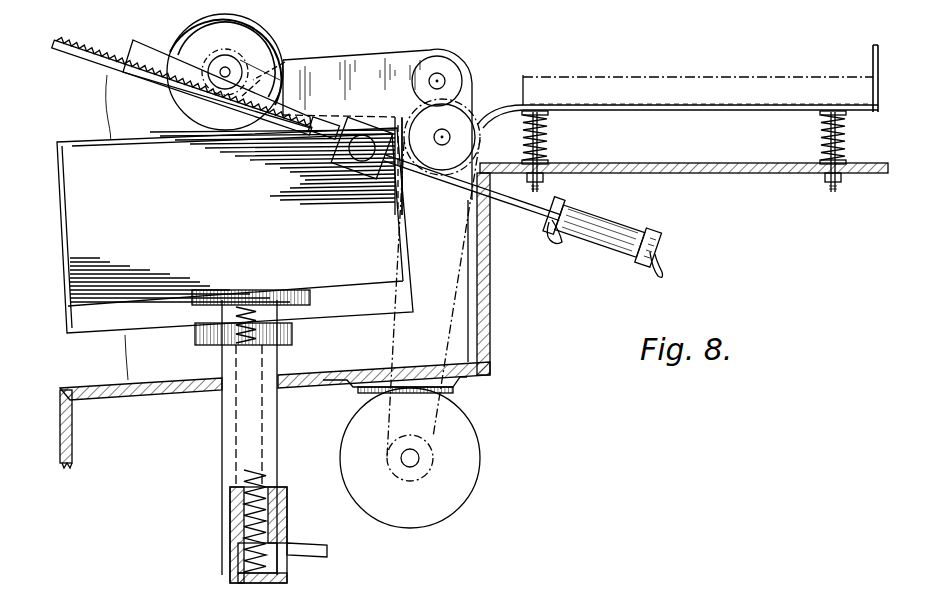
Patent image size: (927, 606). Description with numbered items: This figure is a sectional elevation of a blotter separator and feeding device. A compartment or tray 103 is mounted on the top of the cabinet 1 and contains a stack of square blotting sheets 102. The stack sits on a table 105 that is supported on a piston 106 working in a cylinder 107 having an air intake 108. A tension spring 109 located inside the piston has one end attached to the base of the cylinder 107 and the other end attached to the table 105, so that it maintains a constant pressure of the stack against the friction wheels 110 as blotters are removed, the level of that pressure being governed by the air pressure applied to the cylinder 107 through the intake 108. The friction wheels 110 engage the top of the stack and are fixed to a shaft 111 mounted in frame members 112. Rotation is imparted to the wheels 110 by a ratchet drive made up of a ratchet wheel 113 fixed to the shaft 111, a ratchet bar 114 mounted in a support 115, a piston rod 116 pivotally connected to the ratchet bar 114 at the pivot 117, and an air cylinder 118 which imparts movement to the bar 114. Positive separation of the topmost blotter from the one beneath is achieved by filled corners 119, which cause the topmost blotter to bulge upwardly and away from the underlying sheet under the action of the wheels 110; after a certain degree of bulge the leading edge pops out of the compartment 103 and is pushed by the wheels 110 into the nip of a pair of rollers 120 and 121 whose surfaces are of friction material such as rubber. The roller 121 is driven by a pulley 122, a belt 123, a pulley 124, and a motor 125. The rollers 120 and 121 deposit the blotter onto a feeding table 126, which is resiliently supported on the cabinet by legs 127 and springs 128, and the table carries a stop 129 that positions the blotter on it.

The cabinet 1 is at (698, 166).
The blotting sheets 102 is at (75, 243).
The compartment or tray 103 is at (85, 216).
The table 105 is at (70, 303).
The piston 106 is at (222, 315).
The cylinder 107 is at (240, 475).
The air intake 108 is at (305, 545).
The tension spring 109 is at (245, 510).
The friction wheels 110 is at (257, 33).
The shaft 111 is at (222, 76).
The frame members 112 is at (337, 63).
The ratchet wheel 113 is at (285, 62).
The ratchet bar 114 is at (93, 60).
The support 115 is at (160, 85).
The piston rod 116 is at (462, 201).
The pivotal connection 117 is at (337, 157).
The air cylinder 118 is at (607, 243).
The filled corners 119 is at (394, 120).
The roller 120 is at (444, 68).
The roller 121 is at (458, 120).
The pulley 122 is at (482, 141).
The belt 123 is at (462, 284).
The pulley 124 is at (415, 458).
The motor 125 is at (462, 478).
The feeding table 126 is at (710, 98).
The legs 127 is at (546, 129).
The springs 128 is at (544, 148).
The stop 129 is at (878, 80).